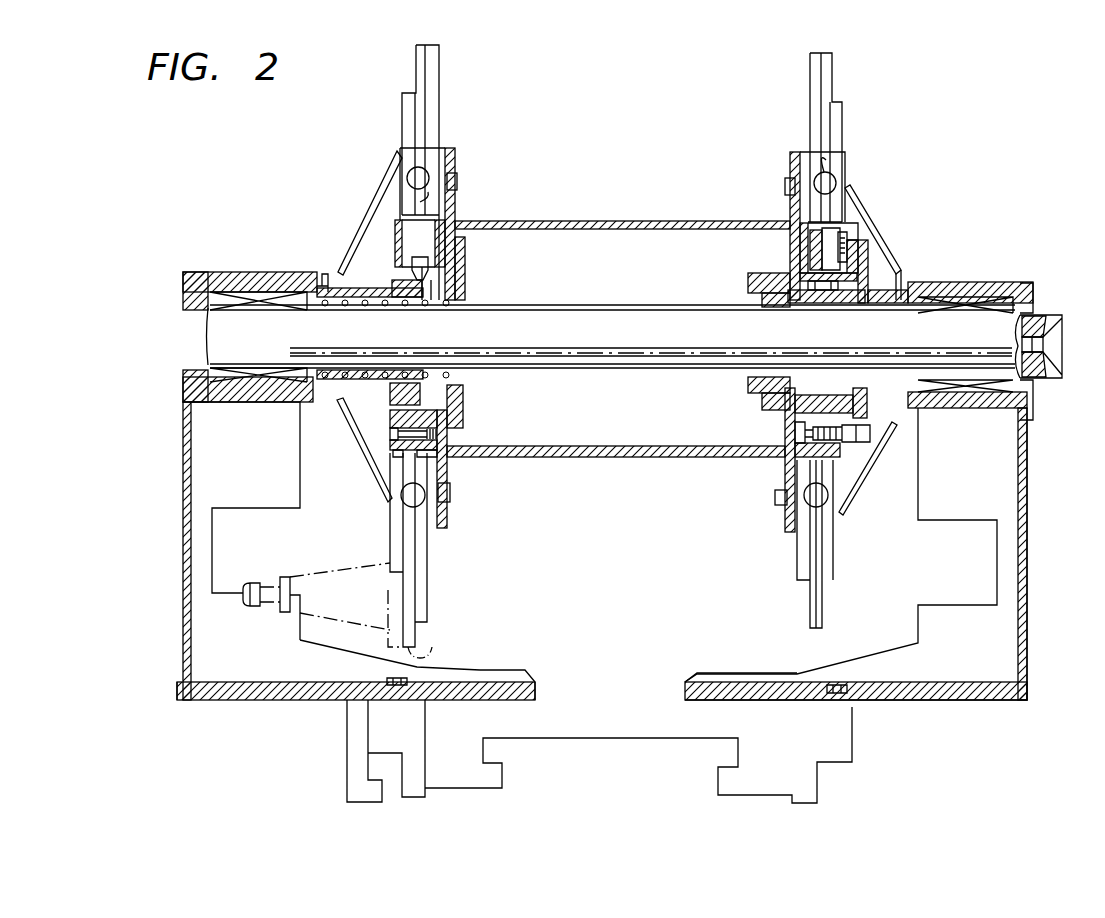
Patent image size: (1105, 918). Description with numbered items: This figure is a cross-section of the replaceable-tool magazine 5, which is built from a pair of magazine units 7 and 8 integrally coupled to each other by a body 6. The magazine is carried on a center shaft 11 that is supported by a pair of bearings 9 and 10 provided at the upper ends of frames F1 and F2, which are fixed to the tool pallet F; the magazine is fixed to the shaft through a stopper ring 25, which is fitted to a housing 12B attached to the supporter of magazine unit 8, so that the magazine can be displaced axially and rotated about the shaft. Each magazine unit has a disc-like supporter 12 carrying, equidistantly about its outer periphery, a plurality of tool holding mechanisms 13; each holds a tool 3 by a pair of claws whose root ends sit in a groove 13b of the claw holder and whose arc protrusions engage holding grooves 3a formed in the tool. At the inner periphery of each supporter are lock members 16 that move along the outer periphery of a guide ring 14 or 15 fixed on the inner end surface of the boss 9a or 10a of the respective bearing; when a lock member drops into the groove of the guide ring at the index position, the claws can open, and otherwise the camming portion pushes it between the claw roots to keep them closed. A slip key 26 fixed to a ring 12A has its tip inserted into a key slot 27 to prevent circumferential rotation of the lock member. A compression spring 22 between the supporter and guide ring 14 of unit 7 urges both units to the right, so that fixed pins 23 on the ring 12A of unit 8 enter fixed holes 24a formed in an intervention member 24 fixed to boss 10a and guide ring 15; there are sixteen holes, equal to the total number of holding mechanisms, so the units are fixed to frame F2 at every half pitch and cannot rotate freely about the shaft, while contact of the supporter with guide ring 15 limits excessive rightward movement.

The tool 3 is at (357, 563).
The holding grooves 3a is at (432, 652).
The magazine 5 is at (917, 221).
The body 6 is at (641, 221).
The magazine unit 7 is at (385, 165).
The magazine unit 8 is at (853, 170).
The bearing 9 is at (262, 290).
The boss 9a is at (193, 272).
The bearing 10 is at (975, 290).
The boss 10a is at (1033, 288).
The center shaft 11 is at (610, 357).
The disc-like supporter 12 is at (465, 237).
The ring 12A is at (463, 420).
The housing 12B is at (750, 290).
The tool holding mechanisms 13 is at (439, 103).
The groove 13b is at (420, 202).
The guide ring 14 is at (385, 408).
The guide ring 15 is at (835, 303).
The lock members 16 is at (402, 237).
The compression spring 22 is at (388, 305).
The fixed pins 23 is at (870, 432).
The intervention member 24 is at (890, 303).
The fixed holes 24a is at (850, 480).
The stopper ring 25 is at (780, 305).
The slip key 26 is at (832, 242).
The key slot 27 is at (855, 253).
The tool pallet F is at (600, 738).
The frame F1 is at (183, 493).
The frame F2 is at (1027, 570).